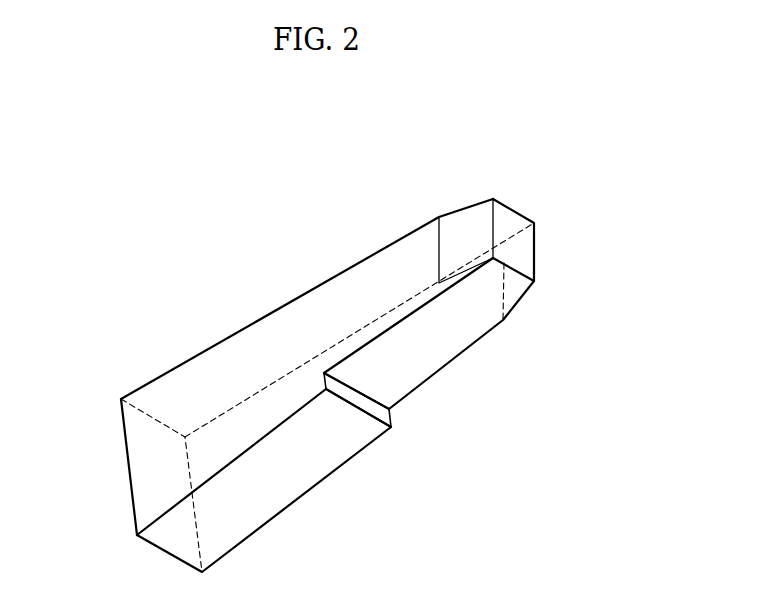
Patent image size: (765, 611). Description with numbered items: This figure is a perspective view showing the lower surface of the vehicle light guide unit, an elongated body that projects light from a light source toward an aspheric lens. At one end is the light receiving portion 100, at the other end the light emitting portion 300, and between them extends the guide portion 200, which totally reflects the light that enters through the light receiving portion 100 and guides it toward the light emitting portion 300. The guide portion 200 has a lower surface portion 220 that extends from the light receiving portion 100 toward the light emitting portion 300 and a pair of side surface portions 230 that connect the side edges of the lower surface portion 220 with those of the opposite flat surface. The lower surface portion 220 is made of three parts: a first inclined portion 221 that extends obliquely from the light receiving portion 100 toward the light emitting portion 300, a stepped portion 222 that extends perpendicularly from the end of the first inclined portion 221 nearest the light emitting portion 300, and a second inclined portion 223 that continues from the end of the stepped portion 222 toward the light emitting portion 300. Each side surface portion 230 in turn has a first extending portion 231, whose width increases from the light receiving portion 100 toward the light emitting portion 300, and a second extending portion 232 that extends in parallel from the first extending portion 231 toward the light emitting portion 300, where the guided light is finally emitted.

The light receiving portion 100 is at (525, 200).
The guide portion 200 is at (370, 361).
The lower surface portion 220 is at (335, 425).
The first inclined portion 221 is at (428, 339).
The stepped portion 222 is at (388, 430).
The second inclined portion 223 is at (293, 462).
The side surface portion 230 is at (307, 332).
The first extending portion 231 is at (443, 209).
The second extending portion 232 is at (342, 307).
The light emitting portion 300 is at (140, 466).